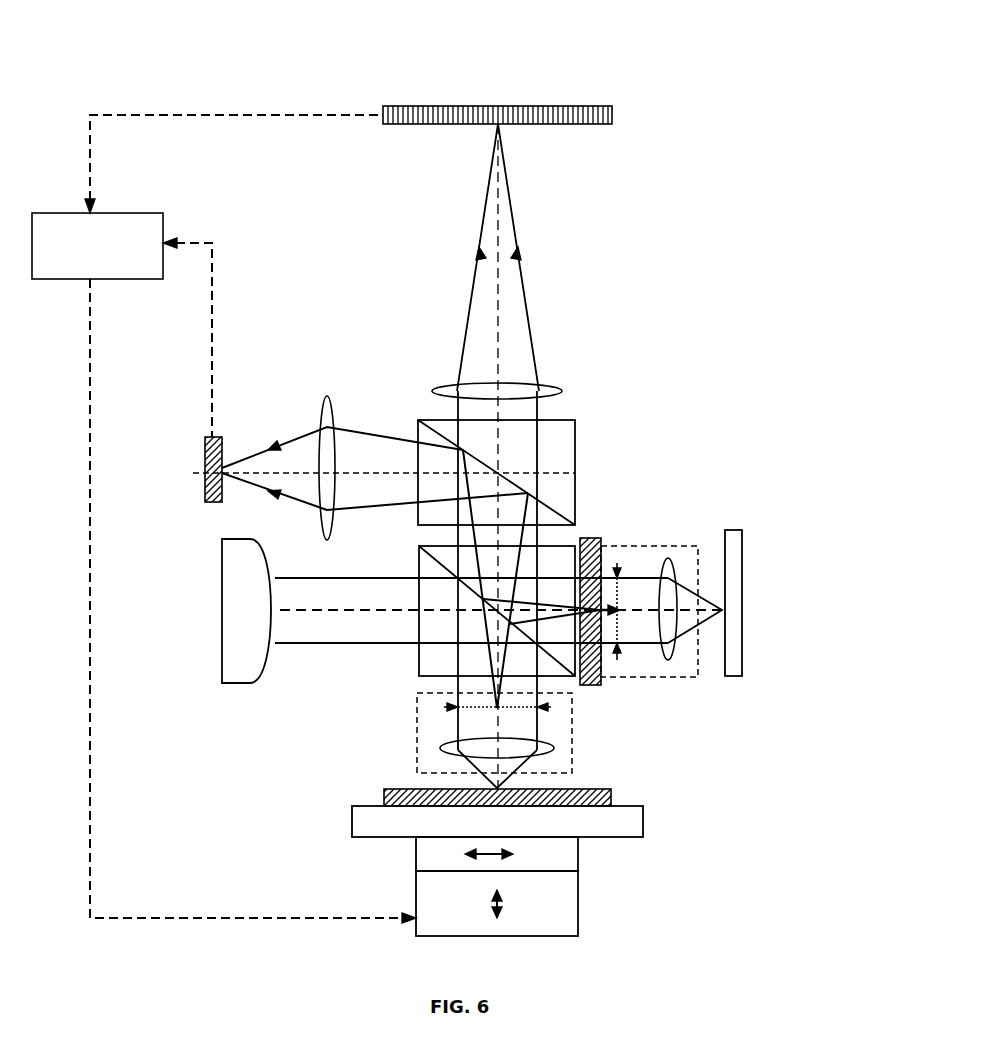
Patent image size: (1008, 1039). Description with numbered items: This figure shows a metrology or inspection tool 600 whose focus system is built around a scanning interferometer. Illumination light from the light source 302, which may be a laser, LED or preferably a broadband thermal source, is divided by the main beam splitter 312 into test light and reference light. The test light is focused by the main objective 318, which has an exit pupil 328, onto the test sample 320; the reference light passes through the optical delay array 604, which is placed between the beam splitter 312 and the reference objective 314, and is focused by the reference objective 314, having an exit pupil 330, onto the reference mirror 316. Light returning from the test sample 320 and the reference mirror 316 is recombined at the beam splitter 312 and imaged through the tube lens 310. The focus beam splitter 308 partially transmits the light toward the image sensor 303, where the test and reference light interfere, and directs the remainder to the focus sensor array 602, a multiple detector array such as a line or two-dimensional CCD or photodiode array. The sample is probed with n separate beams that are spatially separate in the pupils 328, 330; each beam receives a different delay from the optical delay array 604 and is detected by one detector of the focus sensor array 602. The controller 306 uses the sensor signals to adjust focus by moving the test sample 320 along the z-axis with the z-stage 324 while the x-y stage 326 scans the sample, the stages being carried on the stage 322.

The metrology or inspection tool 600 is at (773, 176).
The light source 302 is at (238, 572).
The image sensor 303 is at (612, 124).
The controller 306 is at (120, 213).
The focus beam splitter 308 is at (562, 457).
The tube lens 310 is at (552, 388).
The main beam splitter 312 is at (433, 655).
The reference objective 314 is at (675, 556).
The reference mirror 316 is at (742, 617).
The main objective 318 is at (540, 752).
The test sample 320 is at (600, 790).
The stage 322 is at (640, 826).
The z-stage 324 is at (573, 863).
The x-y stage 326 is at (562, 924).
The exit pupil 328 is at (460, 711).
The exit pupil 330 is at (327, 400).
The focus sensor array 602 is at (205, 445).
The optical delay array 604 is at (598, 538).